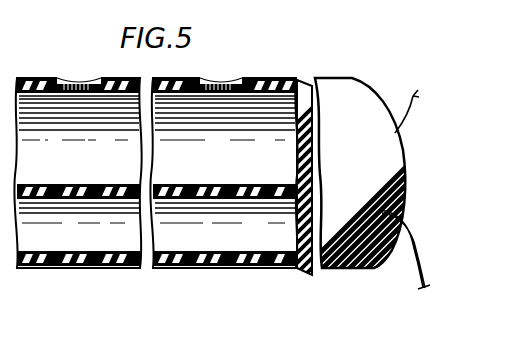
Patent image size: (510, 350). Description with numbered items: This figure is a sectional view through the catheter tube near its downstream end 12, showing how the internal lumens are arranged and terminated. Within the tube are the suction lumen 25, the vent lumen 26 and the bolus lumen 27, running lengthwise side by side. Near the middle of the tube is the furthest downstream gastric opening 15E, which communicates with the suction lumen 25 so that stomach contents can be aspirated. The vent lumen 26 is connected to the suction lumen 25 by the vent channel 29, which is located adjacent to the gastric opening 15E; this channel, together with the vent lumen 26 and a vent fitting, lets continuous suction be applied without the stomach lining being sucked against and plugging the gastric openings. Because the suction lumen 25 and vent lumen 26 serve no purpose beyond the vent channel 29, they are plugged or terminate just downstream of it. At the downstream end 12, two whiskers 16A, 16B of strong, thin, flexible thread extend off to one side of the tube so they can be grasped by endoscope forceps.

The downstream end 12 is at (368, 77).
The gastric opening 15E is at (220, 78).
The whisker 16A is at (407, 96).
The whisker 16B is at (406, 242).
The suction lumen 25 is at (186, 172).
The vent lumen 26 is at (199, 250).
The bolus lumen 27 is at (240, 2).
The vent channel 29 is at (226, 186).